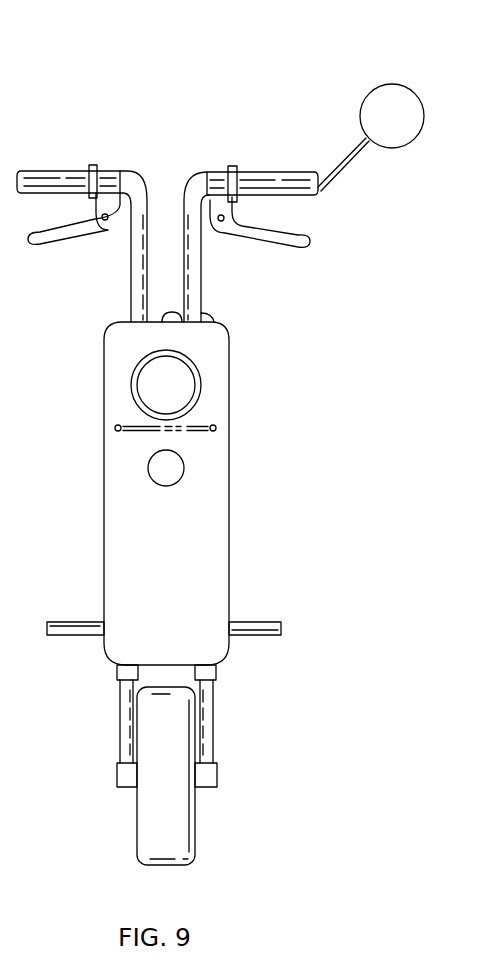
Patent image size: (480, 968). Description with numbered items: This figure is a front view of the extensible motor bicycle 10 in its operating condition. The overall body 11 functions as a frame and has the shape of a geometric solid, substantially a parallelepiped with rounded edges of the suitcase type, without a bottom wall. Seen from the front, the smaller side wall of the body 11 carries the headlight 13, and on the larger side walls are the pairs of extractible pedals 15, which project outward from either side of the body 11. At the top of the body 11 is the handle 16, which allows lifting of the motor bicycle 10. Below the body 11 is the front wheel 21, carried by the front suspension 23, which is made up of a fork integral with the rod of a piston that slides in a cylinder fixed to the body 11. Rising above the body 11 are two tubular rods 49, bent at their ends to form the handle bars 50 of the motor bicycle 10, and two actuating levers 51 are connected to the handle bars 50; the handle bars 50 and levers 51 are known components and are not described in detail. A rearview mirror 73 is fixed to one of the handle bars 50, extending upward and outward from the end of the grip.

The extensible motor bicycle 10 is at (253, 469).
The body 11 is at (230, 503).
The headlight 13 is at (157, 403).
The extractible pedals 15 is at (62, 632).
The handle 16 is at (213, 315).
The front wheel 21 is at (185, 810).
The front suspension 23 is at (213, 755).
The tubular rods 49 is at (196, 265).
The handle bars 50 is at (77, 178).
The actuating levers 51 is at (63, 232).
The rearview mirror 73 is at (394, 103).